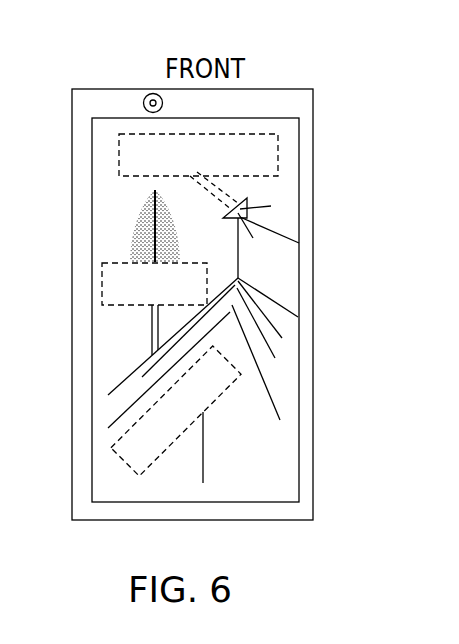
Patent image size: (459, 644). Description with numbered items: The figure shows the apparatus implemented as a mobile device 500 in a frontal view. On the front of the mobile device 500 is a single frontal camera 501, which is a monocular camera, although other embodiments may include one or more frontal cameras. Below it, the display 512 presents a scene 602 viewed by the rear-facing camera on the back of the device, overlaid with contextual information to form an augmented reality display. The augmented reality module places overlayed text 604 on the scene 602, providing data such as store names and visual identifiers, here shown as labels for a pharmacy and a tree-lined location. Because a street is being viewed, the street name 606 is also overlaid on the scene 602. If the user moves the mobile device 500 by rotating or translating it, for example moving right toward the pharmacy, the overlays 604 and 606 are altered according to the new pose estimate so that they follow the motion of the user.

The mobile device 500 is at (291, 89).
The frontal camera 501 is at (148, 88).
The display 512 is at (297, 118).
The scene 602 is at (278, 270).
The overlayed text 604 is at (282, 157).
The street name 606 is at (212, 405).